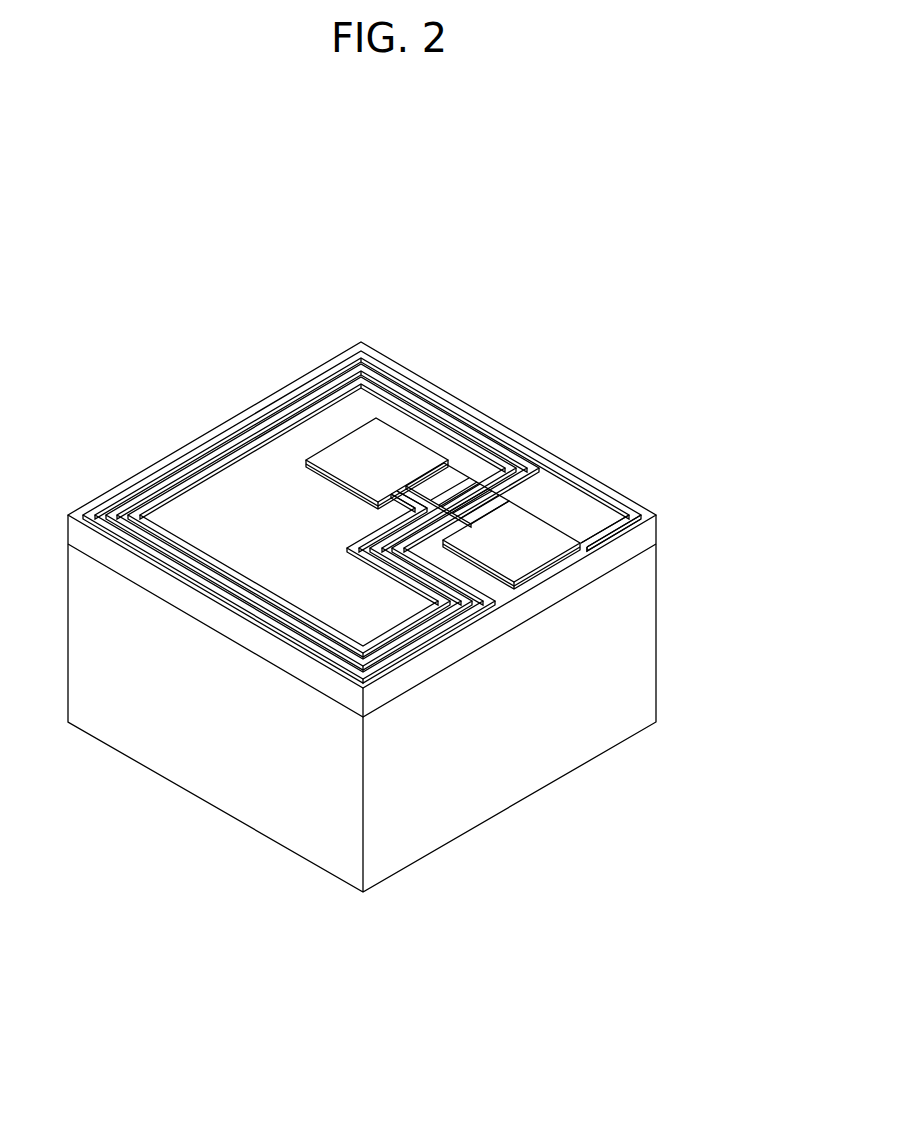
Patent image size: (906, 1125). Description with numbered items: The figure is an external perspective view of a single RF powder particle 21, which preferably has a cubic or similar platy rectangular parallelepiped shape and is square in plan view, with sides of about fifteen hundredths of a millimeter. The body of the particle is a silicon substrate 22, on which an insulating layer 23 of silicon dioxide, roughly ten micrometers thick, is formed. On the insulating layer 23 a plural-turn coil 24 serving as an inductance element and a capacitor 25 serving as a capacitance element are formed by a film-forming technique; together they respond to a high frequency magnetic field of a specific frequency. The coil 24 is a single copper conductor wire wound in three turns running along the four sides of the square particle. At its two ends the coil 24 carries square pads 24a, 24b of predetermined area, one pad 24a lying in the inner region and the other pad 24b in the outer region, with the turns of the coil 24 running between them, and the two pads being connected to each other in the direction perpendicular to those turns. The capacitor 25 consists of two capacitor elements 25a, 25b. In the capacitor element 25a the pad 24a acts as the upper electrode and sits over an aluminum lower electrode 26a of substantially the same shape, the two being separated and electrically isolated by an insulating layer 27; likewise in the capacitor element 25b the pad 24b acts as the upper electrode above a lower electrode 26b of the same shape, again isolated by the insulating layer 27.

The RF powder particle 21 is at (637, 488).
The substrate 22 is at (643, 647).
The insulating layer 23 is at (657, 526).
The coil 24 is at (440, 397).
The pad 24a is at (380, 447).
The pad 24b is at (527, 553).
The capacitor 25 is at (551, 547).
The capacitor element 25a is at (333, 440).
The capacitor element 25b is at (561, 523).
The lower electrode 26a is at (337, 487).
The lower electrode 26b is at (500, 583).
The insulating layer 27 is at (548, 509).